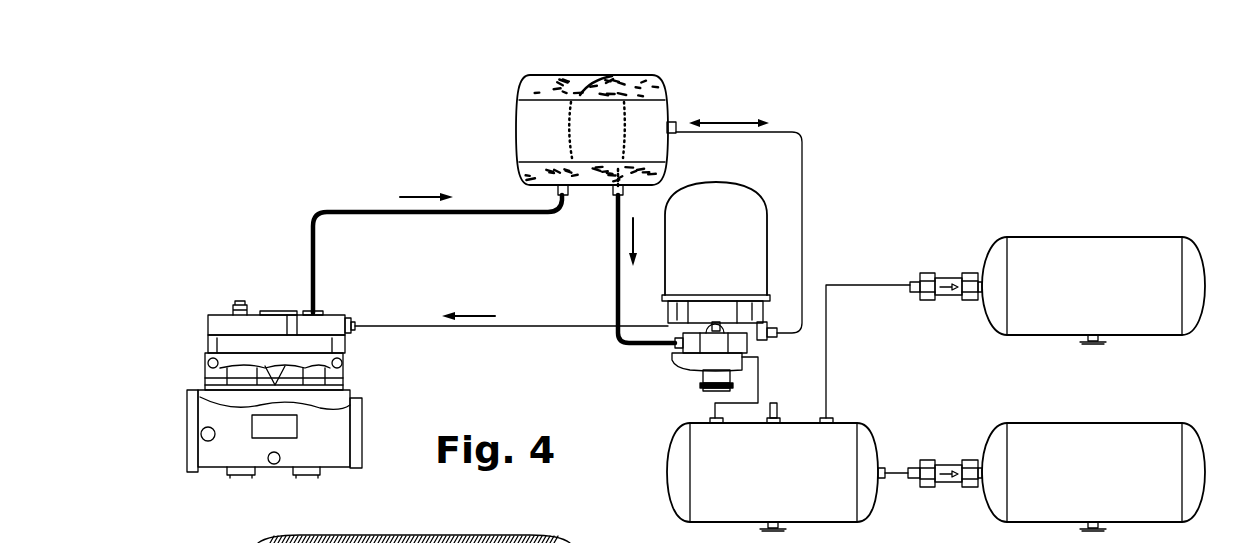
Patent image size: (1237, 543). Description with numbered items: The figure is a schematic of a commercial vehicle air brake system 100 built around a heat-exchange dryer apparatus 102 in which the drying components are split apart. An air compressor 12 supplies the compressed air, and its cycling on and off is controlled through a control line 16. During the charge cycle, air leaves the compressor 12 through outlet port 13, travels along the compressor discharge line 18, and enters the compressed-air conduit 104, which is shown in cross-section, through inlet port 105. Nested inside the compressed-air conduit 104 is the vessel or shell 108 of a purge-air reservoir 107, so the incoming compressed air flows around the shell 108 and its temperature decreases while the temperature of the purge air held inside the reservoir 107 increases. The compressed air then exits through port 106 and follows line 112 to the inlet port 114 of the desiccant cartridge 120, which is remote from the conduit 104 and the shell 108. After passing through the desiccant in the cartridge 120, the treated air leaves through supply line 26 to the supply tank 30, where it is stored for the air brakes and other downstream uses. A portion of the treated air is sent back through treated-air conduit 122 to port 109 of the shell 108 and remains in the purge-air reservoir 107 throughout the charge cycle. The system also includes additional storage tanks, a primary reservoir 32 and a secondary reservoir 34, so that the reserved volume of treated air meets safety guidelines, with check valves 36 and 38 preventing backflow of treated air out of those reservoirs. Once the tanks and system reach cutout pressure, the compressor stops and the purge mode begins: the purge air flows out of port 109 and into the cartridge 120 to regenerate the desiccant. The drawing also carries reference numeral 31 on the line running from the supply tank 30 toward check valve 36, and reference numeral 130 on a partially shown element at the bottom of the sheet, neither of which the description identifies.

The commercial vehicle air brake system 100 is at (326, 143).
The heat-exchange dryer apparatus 102 is at (498, 97).
The compressed-air conduit 104 is at (605, 78).
The inlet port 105 is at (647, 80).
The port 106 is at (612, 195).
The purge-air reservoir 107 is at (537, 138).
The vessel or shell 108 is at (543, 102).
The port 109 is at (675, 125).
The line 112 is at (617, 305).
The inlet port 114 is at (676, 350).
The desiccant cartridge 120 is at (713, 182).
The treated-air conduit 122 is at (802, 195).
The air compressor 12 is at (216, 322).
The outlet port 13 is at (323, 312).
The control line 16 is at (425, 332).
The compressor discharge line 18 is at (340, 212).
The supply line 26 is at (758, 380).
The supply tank 30 is at (667, 485).
The conduit 31 is at (826, 390).
The primary reservoir 32 is at (1122, 237).
The secondary reservoir 34 is at (1120, 423).
The check valve 36 is at (928, 273).
The check valve 38 is at (933, 460).
The tank 130 is at (575, 542).